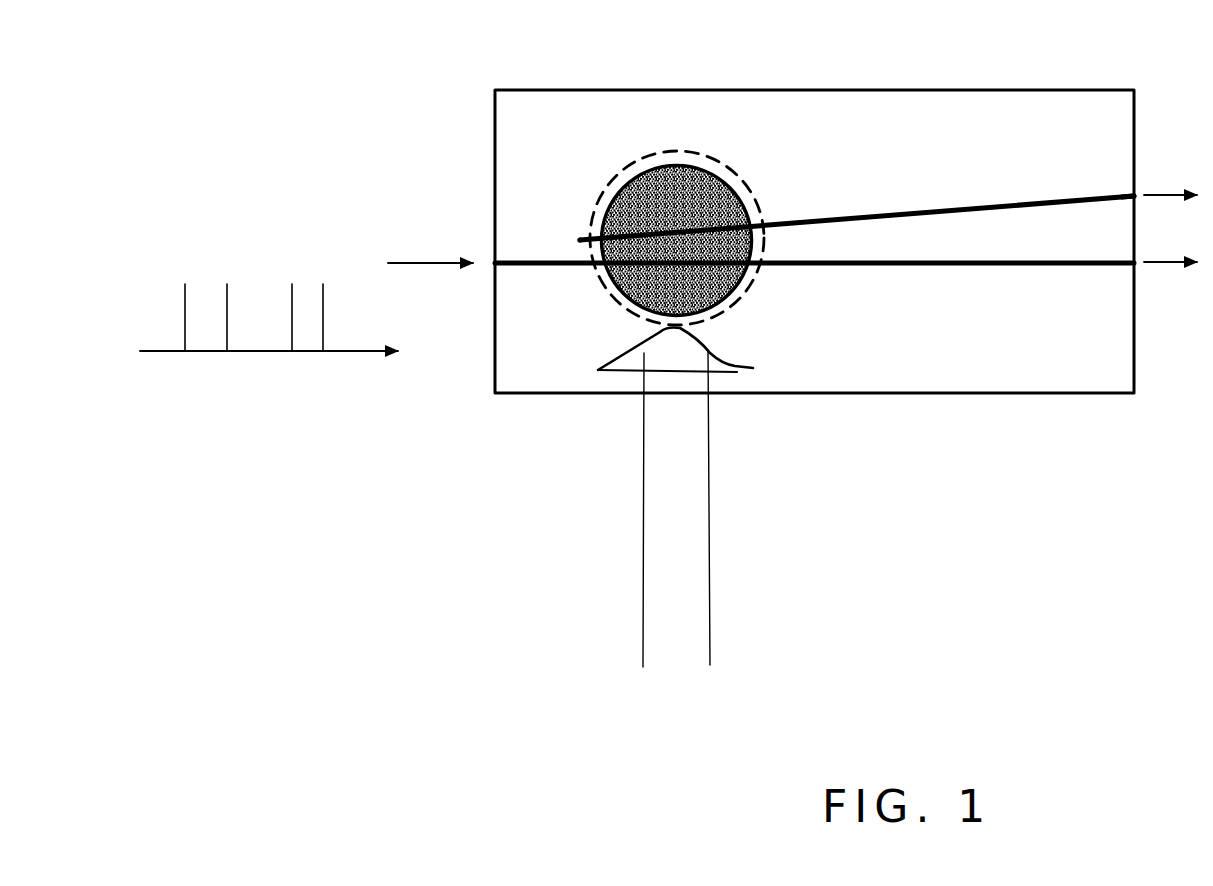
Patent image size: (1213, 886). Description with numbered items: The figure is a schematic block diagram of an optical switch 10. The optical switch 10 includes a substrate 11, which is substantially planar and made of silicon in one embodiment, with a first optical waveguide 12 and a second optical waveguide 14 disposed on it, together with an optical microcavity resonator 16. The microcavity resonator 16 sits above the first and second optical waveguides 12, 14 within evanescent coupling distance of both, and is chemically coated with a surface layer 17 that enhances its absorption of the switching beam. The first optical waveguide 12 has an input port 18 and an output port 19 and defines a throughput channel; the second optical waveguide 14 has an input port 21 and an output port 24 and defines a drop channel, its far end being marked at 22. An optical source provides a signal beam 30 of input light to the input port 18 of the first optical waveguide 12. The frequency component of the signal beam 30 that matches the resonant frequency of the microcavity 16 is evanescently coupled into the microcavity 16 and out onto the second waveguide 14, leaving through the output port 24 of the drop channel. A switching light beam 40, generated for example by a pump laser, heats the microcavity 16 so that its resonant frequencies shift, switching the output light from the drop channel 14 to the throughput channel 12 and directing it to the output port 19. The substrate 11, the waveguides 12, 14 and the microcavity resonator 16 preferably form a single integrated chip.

The optical switch 10 is at (879, 446).
The substrate 11 is at (645, 113).
The first optical waveguide 12 is at (920, 264).
The second optical waveguide 14 is at (938, 210).
The optical microcavity resonator 16 is at (712, 173).
The surface layer 17 is at (634, 163).
The input port 18 is at (478, 249).
The output port 19 is at (1148, 280).
The input port 21 is at (567, 230).
The output end of second waveguide 22 is at (1121, 184).
The output port 24 is at (1148, 183).
The signal beam 30 is at (256, 356).
The switching light beam 40 is at (642, 638).